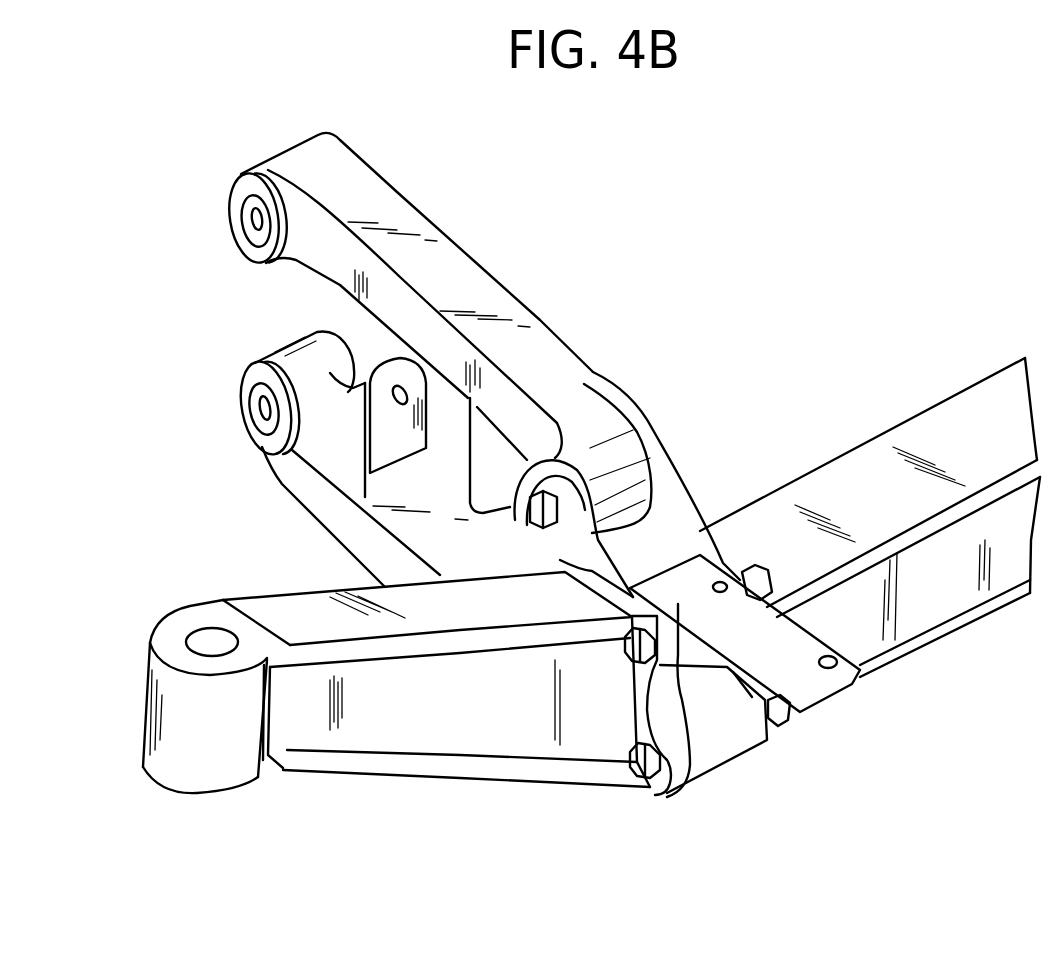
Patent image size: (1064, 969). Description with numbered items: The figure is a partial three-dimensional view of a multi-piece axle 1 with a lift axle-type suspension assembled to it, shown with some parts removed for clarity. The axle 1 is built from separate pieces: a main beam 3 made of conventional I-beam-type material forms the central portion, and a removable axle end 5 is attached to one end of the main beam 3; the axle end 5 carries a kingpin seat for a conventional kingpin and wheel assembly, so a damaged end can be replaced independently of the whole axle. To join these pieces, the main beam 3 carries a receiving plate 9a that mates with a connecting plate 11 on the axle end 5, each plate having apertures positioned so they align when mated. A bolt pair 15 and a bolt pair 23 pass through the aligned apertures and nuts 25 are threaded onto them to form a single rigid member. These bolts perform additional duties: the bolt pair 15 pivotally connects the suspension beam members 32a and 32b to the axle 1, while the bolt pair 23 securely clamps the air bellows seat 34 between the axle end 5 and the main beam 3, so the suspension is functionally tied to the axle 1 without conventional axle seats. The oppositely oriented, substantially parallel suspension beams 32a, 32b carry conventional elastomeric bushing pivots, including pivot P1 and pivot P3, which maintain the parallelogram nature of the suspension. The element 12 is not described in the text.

The axle 1 is at (828, 287).
The main beam 3 is at (817, 487).
The axle end 5 is at (402, 737).
The receiving plate 9a is at (657, 523).
The connecting plate 11 is at (660, 787).
The bushing 12 is at (183, 623).
The bolt pair 15 is at (527, 517).
The bolt pair 23 is at (630, 655).
The nuts 25 is at (760, 566).
The suspension beam member 32a is at (457, 252).
The suspension beam member 32b is at (405, 530).
The air bellows seat 34 is at (700, 713).
The pivot P1 is at (252, 232).
The pivot P3 is at (267, 425).